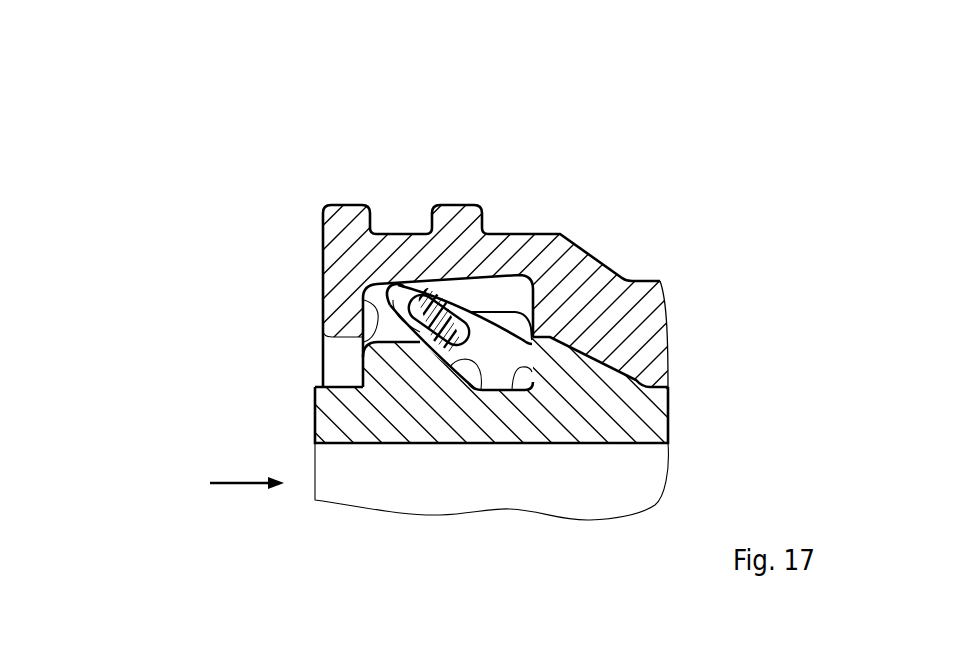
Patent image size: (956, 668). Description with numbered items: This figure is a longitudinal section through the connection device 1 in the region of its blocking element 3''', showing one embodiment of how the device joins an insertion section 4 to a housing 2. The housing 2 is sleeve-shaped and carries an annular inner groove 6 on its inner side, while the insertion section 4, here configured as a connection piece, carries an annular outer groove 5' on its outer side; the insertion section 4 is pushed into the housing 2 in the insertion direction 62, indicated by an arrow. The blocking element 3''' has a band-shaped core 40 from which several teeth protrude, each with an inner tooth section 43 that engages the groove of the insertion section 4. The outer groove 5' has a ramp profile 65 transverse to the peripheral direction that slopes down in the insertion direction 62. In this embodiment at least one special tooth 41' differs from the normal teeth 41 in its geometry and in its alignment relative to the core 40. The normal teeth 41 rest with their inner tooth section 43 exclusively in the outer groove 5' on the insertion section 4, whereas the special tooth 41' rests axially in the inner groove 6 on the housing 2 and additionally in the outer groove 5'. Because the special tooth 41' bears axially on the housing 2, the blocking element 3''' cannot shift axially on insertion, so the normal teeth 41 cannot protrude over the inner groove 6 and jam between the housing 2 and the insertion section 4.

The connection device 1 is at (585, 150).
The housing 2 is at (617, 270).
The insertion section 4 is at (380, 447).
The inner groove 6 is at (360, 322).
The core 40 is at (431, 298).
The teeth 41 is at (428, 278).
The special tooth 41' is at (468, 262).
The spring / reinforcement insert 3''' is at (458, 251).
The inner tooth section 43 is at (495, 389).
The ramp profile 65 is at (493, 378).
The contact surface 5' is at (541, 444).
The insertion direction 62 is at (238, 484).